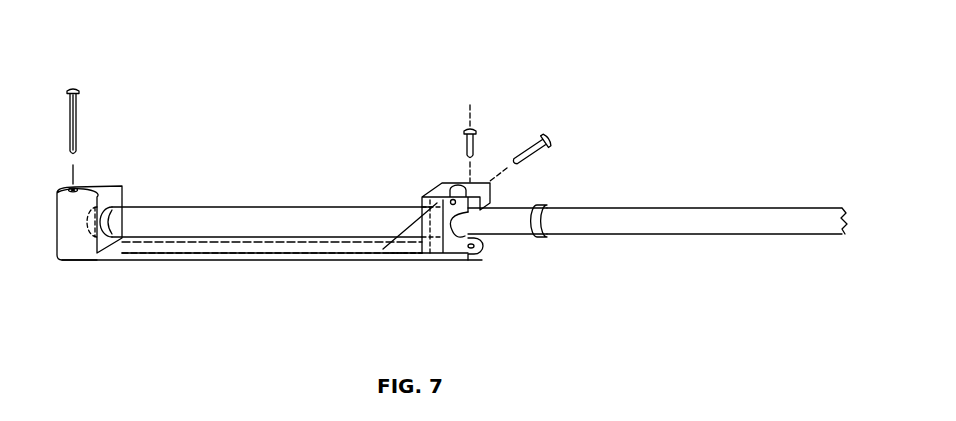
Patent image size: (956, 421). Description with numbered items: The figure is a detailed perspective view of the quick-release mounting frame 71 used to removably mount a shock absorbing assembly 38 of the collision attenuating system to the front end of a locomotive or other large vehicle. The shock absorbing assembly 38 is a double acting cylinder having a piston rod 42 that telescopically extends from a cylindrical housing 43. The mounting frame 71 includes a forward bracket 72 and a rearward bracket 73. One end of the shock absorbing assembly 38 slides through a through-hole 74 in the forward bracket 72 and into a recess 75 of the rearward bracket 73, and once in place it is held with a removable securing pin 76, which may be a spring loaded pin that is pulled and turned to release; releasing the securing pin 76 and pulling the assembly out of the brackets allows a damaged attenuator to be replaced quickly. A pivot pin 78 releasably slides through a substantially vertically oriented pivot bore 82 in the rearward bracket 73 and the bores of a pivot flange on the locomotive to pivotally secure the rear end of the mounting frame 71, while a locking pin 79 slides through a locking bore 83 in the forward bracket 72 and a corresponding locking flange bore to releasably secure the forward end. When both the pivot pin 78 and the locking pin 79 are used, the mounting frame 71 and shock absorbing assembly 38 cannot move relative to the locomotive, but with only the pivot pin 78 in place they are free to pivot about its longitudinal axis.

The shock absorbing assembly 38 is at (516, 209).
The piston rod 42 is at (750, 208).
The cylindrical housing 43 is at (230, 207).
The quick-release mounting frame 71 is at (262, 259).
The forward bracket 72 is at (430, 256).
The rearward bracket 73 is at (81, 252).
The through-hole 74 is at (444, 250).
The recess 75 is at (118, 214).
The removable securing pin 76 is at (526, 141).
The pivot pin 78 is at (85, 83).
The locking pin 79 is at (459, 143).
The pivot bore 82 is at (78, 183).
The locking bore 83 is at (480, 247).